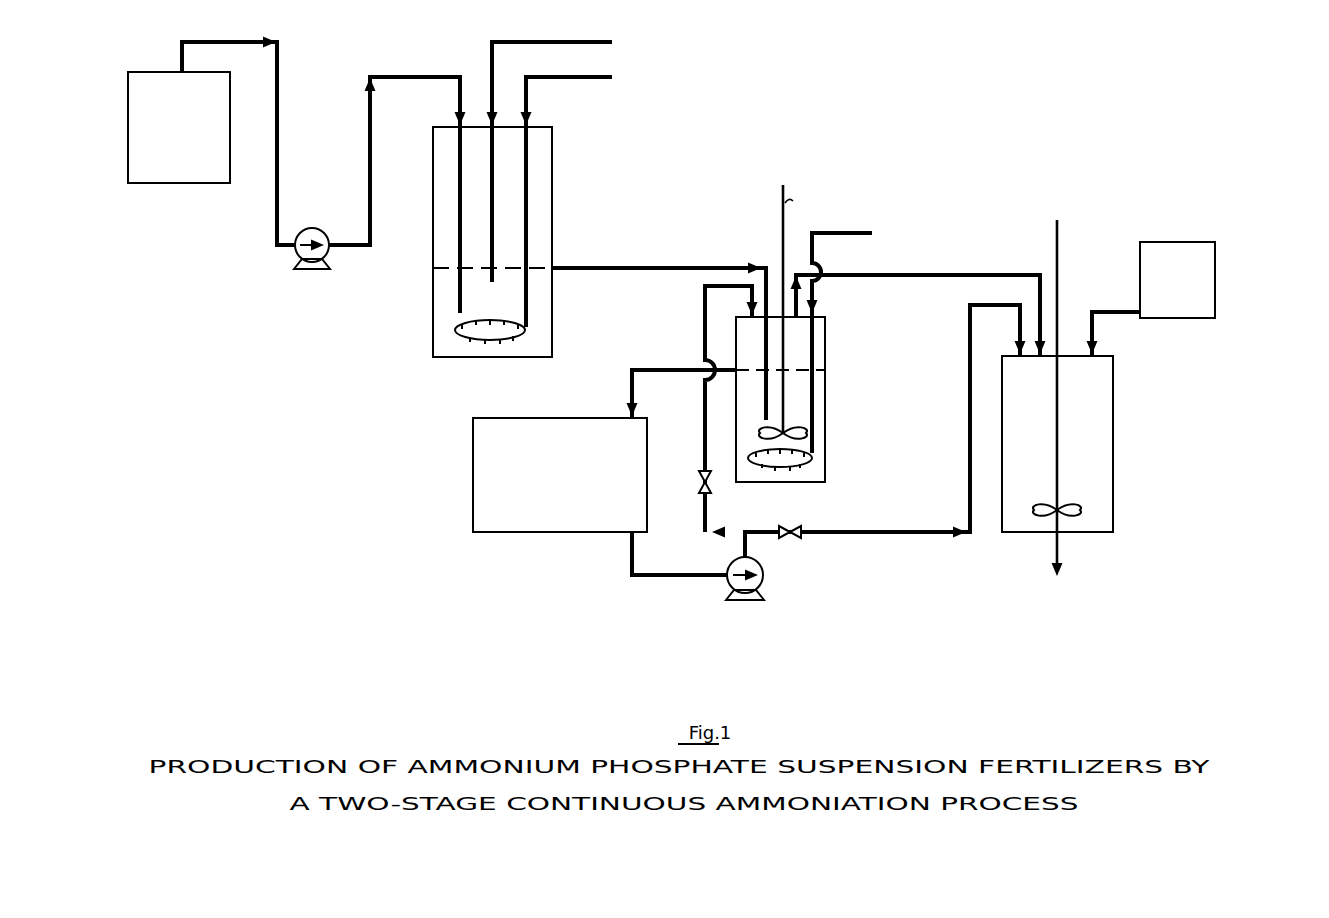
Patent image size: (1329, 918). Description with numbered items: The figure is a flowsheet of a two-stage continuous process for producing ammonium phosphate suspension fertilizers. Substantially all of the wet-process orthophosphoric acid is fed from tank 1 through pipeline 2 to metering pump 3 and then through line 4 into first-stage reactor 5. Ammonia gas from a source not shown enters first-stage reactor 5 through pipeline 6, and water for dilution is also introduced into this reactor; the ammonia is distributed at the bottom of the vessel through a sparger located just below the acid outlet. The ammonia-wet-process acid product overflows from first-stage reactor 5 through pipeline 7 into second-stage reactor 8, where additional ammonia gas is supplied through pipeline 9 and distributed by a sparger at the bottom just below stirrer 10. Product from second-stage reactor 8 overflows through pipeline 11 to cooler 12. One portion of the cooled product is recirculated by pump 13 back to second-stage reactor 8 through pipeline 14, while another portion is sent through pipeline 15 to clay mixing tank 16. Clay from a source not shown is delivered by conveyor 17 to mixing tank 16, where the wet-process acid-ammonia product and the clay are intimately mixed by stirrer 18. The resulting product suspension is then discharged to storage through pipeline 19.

The tank 1 is at (138, 70).
The pipeline 2 is at (221, 43).
The metering pump 3 is at (319, 229).
The line 4 is at (409, 77).
The first-stage reactor 5 is at (432, 180).
The pipeline 6 is at (559, 85).
The pipeline 7 is at (623, 271).
The second-stage reactor 8 is at (827, 340).
The pipeline 9 is at (839, 238).
The stirrer 10 is at (783, 234).
The pipeline 11 is at (676, 376).
The cooler 12 is at (472, 470).
The pump 13 is at (762, 567).
The pipeline 14 is at (707, 498).
The pipeline 15 is at (968, 485).
The clay mixing tank 16 is at (1113, 367).
The conveyor 17 is at (1115, 311).
The stirrer 18 is at (1058, 235).
The pipeline 19 is at (1060, 553).